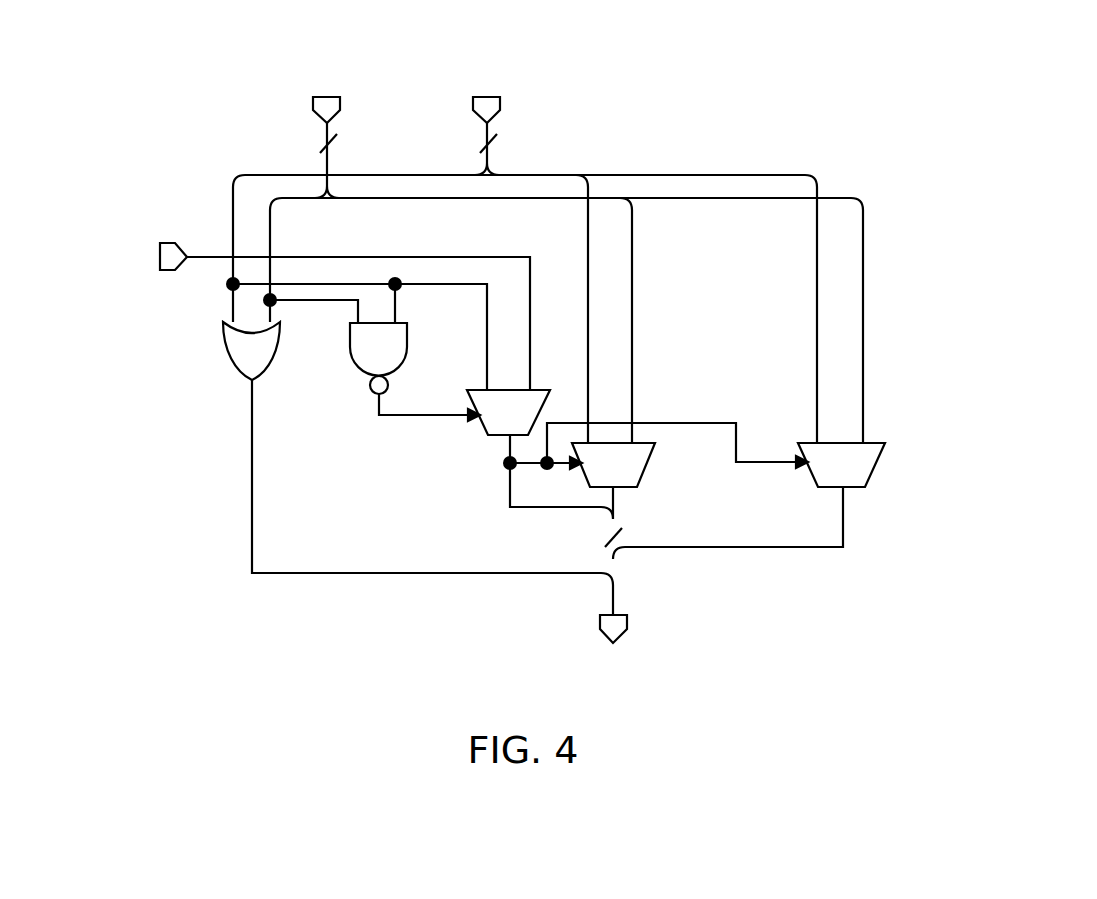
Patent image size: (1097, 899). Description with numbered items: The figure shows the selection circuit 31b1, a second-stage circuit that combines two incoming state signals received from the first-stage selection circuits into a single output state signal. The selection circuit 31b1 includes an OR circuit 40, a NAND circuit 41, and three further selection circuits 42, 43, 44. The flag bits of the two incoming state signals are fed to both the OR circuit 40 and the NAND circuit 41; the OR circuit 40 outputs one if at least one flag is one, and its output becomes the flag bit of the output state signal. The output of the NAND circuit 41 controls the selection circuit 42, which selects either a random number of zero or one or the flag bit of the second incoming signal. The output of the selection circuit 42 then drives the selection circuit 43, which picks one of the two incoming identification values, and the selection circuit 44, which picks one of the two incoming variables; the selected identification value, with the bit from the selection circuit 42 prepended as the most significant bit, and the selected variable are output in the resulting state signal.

The selection circuit 31b1 is at (812, 48).
The OR circuit 40 is at (233, 371).
The NAND circuit 41 is at (355, 370).
The selection circuit 42 is at (490, 440).
The selection circuit 43 is at (642, 465).
The selection circuit 44 is at (877, 465).